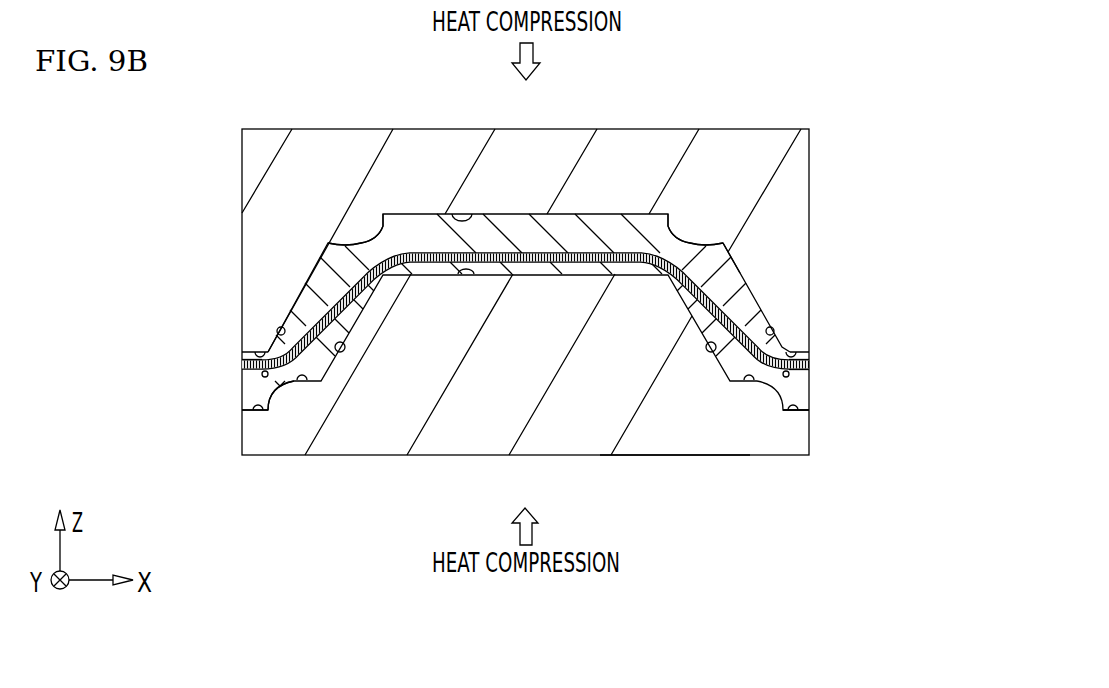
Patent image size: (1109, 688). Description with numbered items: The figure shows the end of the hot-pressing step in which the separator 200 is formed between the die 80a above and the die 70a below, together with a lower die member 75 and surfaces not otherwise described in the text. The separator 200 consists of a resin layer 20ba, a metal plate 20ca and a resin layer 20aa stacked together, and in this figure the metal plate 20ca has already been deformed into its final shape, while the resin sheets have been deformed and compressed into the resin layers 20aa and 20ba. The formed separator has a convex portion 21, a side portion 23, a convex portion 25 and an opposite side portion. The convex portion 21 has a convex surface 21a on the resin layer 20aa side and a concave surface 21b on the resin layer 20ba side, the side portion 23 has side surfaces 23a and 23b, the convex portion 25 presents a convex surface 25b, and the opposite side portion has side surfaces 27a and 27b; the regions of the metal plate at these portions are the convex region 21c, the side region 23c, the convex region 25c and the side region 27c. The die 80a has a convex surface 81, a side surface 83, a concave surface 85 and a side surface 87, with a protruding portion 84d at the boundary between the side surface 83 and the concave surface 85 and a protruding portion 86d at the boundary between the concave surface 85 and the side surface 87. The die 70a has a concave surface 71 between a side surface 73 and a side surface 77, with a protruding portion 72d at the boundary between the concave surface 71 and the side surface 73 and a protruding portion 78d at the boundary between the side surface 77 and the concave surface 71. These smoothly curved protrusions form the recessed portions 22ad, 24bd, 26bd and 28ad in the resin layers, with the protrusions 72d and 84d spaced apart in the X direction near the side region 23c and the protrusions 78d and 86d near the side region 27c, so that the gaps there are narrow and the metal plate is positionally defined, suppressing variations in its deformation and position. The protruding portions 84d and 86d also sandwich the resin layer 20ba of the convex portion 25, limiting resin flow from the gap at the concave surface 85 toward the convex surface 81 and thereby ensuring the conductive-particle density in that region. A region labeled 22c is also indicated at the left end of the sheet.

The die 80a is at (836, 106).
The concave surface 85 is at (462, 212).
The lower die 75 is at (463, 278).
The protruding portion 84d is at (362, 240).
The protruding portion 86d is at (688, 240).
The protruding portion 72d is at (288, 400).
The protruding portion 78d is at (758, 384).
The convex portion 25 is at (578, 232).
The convex surface 25b is at (523, 255).
The convex region 25c is at (558, 250).
The recessed portion 24bd is at (350, 246).
The recessed portion 26bd is at (737, 254).
The side region 23c is at (318, 265).
The side surface 23b is at (308, 300).
The side surface 23a is at (345, 352).
The side portion 23 is at (372, 336).
The side region 27c is at (722, 240).
The side surface 27b is at (748, 270).
The side surface 27a is at (683, 320).
The side surface 83 is at (278, 328).
The side surface 87 is at (758, 318).
The convex surface 81 is at (793, 348).
The convex portion 21 is at (810, 400).
The convex surface 21a is at (781, 418).
The concave surface 21b is at (802, 356).
The convex region 21c is at (800, 416).
The left flange portion 22c is at (252, 404).
The recessed portion 22ad is at (303, 384).
The depressed portion 28ad is at (748, 384).
The concave surface 71 is at (810, 430).
The side surface 73 is at (340, 376).
The side surface 77 is at (710, 353).
The die 70a is at (678, 468).
The resin layer 20ba is at (829, 358).
The metal plate 20ca is at (824, 372).
The resin layer 20aa is at (829, 388).
The separator 200 is at (840, 413).